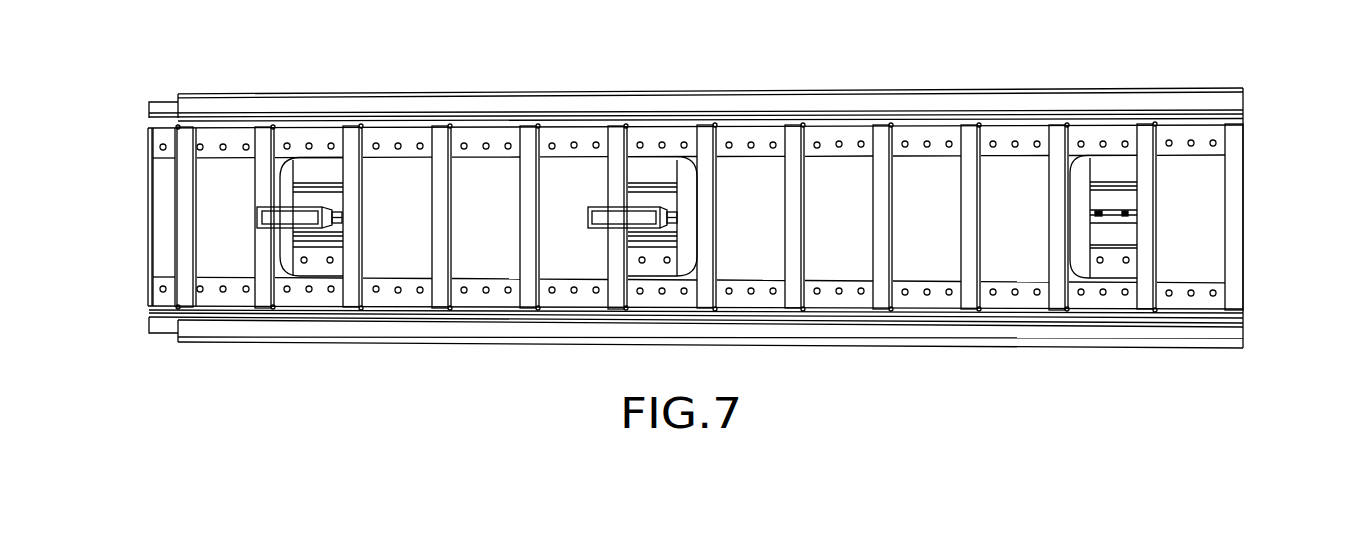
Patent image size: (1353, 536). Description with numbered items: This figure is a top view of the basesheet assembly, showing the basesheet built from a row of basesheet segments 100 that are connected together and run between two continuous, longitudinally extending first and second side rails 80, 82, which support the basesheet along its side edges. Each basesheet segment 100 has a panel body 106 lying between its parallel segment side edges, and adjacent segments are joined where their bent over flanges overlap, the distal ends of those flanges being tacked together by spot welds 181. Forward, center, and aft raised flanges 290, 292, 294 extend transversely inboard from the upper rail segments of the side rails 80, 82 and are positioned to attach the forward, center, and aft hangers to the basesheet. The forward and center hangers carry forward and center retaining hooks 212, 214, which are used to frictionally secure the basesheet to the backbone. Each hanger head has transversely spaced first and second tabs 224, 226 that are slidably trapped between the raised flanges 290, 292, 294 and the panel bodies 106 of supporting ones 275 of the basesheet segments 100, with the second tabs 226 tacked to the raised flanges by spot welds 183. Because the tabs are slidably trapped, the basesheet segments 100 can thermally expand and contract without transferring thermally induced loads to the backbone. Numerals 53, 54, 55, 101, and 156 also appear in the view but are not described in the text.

The upper flange 53 is at (856, 98).
The end bracket 54 is at (143, 268).
The lower flange 55 is at (930, 345).
The first side rail 80 is at (768, 98).
The second side rail 82 is at (795, 336).
The basesheet segment 100 is at (388, 190).
The end panel 101 is at (207, 178).
The panel body 106 is at (565, 178).
The end plate 156 is at (1243, 228).
The spot weld 181 is at (951, 141).
The spot weld 183 is at (304, 263).
The forward retaining hook 212 is at (314, 174).
The center retaining hook 214 is at (652, 214).
The first tab 224 is at (1107, 188).
The second tab 226 is at (1130, 246).
The supporting basesheet segment 275 is at (282, 253).
The forward raised flange 290 is at (301, 215).
The center raised flange 292 is at (655, 172).
The aft raised flange 294 is at (1123, 172).